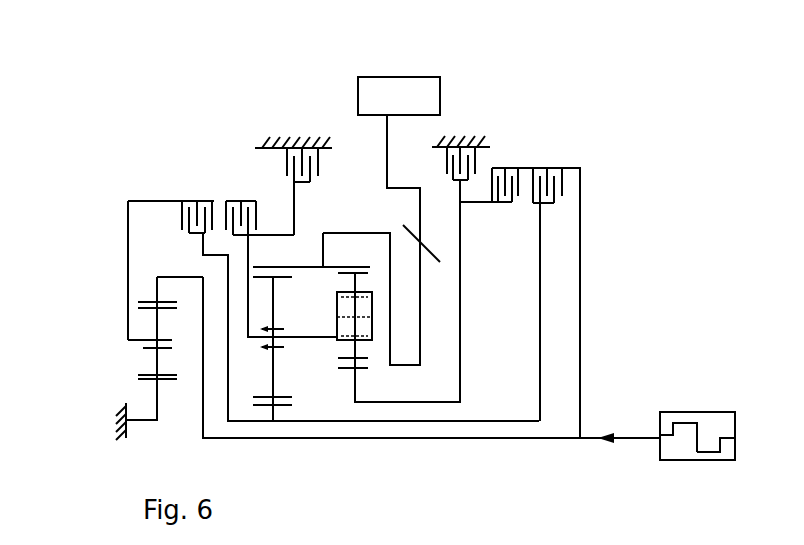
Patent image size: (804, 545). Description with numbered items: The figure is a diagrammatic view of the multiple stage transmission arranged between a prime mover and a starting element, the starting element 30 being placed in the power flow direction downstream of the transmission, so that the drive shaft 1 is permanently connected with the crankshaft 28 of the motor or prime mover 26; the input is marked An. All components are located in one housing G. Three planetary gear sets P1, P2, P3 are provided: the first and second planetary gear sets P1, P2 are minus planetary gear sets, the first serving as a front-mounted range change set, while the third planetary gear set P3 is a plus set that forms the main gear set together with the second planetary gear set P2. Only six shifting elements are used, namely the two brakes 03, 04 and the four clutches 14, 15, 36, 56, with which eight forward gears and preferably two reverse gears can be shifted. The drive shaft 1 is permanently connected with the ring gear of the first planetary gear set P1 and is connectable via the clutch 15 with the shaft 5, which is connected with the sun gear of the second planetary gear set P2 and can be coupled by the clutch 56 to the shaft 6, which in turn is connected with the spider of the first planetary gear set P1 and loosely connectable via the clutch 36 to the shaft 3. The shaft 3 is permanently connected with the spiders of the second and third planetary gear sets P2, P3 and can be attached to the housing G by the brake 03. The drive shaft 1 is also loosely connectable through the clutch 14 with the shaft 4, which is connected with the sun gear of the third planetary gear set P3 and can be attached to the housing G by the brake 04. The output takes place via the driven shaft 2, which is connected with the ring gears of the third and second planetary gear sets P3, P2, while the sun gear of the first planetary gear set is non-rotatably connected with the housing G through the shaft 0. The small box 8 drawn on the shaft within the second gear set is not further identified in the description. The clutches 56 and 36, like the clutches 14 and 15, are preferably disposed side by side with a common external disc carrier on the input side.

The starting element 30 is at (416, 77).
The prime mover 26 is at (680, 461).
The crankshaft 28 is at (712, 461).
The first clutch 14 is at (505, 176).
The second clutch 15 is at (547, 176).
The fourth clutch 56 is at (197, 207).
The third clutch 36 is at (260, 208).
The first brake 03 is at (285, 191).
The second brake 04 is at (448, 163).
The drive shaft 1 is at (157, 294).
The sixth shaft 6 is at (155, 335).
The shaft 0 is at (157, 387).
The driven shaft 2 is at (311, 333).
The third shaft 3 is at (279, 333).
The shaft 8 is at (359, 316).
The fourth shaft 4 is at (353, 372).
The fifth shaft 5 is at (272, 410).
The first planetary gear set P1 is at (130, 363).
The second planetary gear set P2 is at (299, 383).
The third planetary gear set P3 is at (381, 383).
The drive shaft designation An is at (680, 433).
The housing G is at (110, 428).